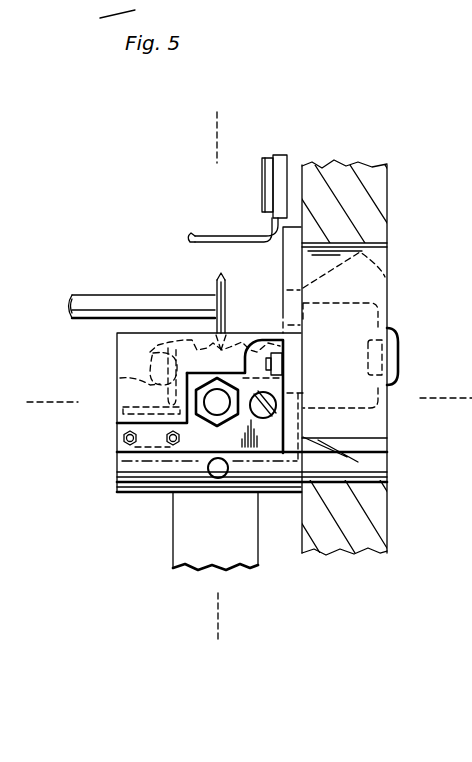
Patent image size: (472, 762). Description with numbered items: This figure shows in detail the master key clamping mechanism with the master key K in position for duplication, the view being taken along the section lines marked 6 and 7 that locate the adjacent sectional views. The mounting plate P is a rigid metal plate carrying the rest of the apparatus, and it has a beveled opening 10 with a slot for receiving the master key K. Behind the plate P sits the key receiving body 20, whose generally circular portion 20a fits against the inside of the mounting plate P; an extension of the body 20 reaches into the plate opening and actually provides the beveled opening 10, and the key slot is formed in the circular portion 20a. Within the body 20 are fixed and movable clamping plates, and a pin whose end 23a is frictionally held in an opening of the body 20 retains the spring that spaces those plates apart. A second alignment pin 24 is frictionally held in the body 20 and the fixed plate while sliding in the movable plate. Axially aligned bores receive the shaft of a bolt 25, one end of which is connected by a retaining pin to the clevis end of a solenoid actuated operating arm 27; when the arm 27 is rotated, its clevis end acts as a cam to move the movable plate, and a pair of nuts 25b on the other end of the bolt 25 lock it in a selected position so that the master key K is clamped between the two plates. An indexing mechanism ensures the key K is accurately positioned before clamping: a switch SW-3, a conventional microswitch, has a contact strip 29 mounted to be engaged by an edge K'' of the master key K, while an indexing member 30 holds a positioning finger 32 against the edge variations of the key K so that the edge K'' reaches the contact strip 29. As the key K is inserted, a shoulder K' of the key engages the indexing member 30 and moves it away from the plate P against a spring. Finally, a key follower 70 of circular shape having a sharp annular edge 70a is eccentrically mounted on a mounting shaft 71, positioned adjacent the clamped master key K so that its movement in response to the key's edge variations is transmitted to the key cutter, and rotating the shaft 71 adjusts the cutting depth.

The section line 6- 6 is at (208, 138).
The section line 7- 7 is at (52, 402).
The mounting plate P is at (346, 166).
The indexing member 30 is at (280, 155).
The positioning finger 32 is at (236, 235).
The circular portion 20a is at (283, 268).
The mounting shaft 71 is at (173, 305).
The key follower 70 is at (216, 279).
The sharp annular edge 70a is at (219, 272).
The beveled opening 10 is at (387, 277).
The shoulder K' is at (332, 381).
The master key K is at (407, 356).
The edge K'' is at (200, 361).
The contact strip 29 is at (117, 377).
The switch SW-3 is at (121, 417).
The bolt 25 is at (213, 408).
The end of pin 23a is at (270, 392).
The nuts 25b is at (220, 416).
The key receiving body 20 is at (118, 481).
The second alignment pin 24 is at (212, 480).
The solenoid actuated operating arm 27 is at (173, 550).